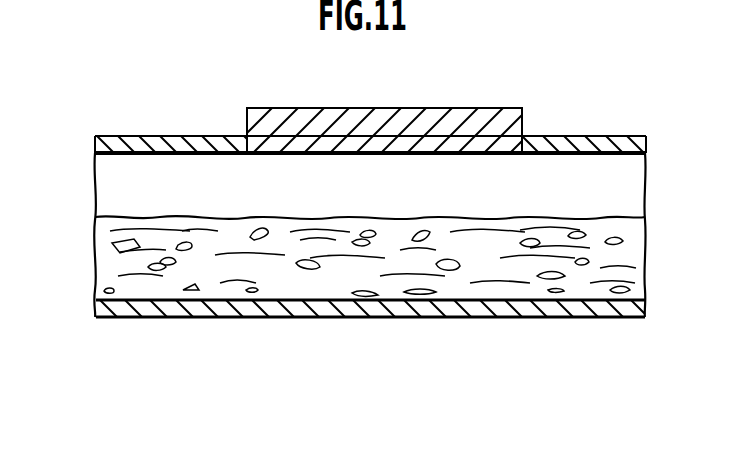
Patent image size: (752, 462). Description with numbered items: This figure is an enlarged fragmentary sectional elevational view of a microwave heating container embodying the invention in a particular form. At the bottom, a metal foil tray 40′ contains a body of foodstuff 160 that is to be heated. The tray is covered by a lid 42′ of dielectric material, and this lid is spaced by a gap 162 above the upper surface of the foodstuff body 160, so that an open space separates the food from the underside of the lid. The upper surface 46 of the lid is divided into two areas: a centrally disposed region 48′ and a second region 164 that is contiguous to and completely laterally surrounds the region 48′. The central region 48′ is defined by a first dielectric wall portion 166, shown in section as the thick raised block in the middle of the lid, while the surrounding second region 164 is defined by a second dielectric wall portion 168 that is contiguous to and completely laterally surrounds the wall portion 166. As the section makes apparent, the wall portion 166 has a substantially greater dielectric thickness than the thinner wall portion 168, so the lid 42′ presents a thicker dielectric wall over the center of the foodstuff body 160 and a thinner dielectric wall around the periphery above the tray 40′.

The metal foil tray 40′ is at (373, 318).
The lid 42′ is at (647, 142).
The upper surface of lid 46 is at (606, 136).
The centrally disposed region 48′ is at (398, 104).
The body of foodstuff 160 is at (100, 248).
The gap 162 is at (289, 191).
The second region 164 is at (202, 136).
The first dielectric wall portion 166 is at (388, 143).
The second dielectric wall portion 168 is at (104, 158).